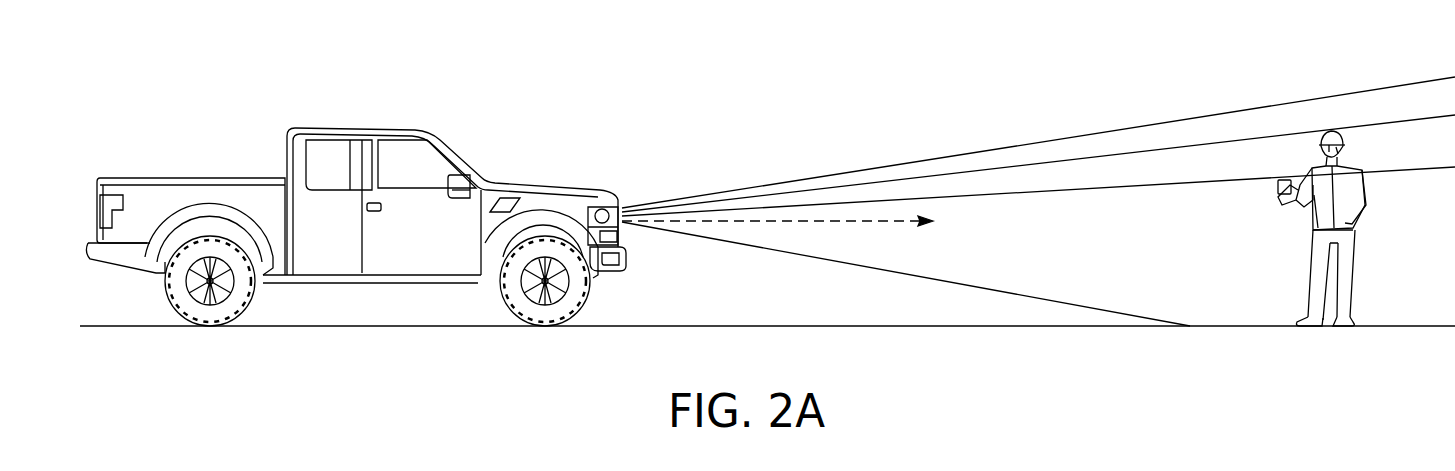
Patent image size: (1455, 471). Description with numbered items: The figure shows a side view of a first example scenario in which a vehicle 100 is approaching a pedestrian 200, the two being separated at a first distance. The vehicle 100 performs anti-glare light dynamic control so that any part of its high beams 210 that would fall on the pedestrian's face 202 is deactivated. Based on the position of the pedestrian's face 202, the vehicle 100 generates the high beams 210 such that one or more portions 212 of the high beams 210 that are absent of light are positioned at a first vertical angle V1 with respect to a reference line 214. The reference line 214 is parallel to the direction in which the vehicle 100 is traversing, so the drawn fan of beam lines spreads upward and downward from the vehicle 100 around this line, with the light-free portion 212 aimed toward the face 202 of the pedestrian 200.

The vehicle 100 is at (299, 110).
The pedestrian 200 is at (1365, 237).
The pedestrian's face 202 is at (1328, 128).
The high beams 210 is at (1202, 247).
The portion of the high beams absent of light 212 is at (1067, 180).
The reference line 214 is at (767, 228).
The first vertical angle V1 is at (860, 223).